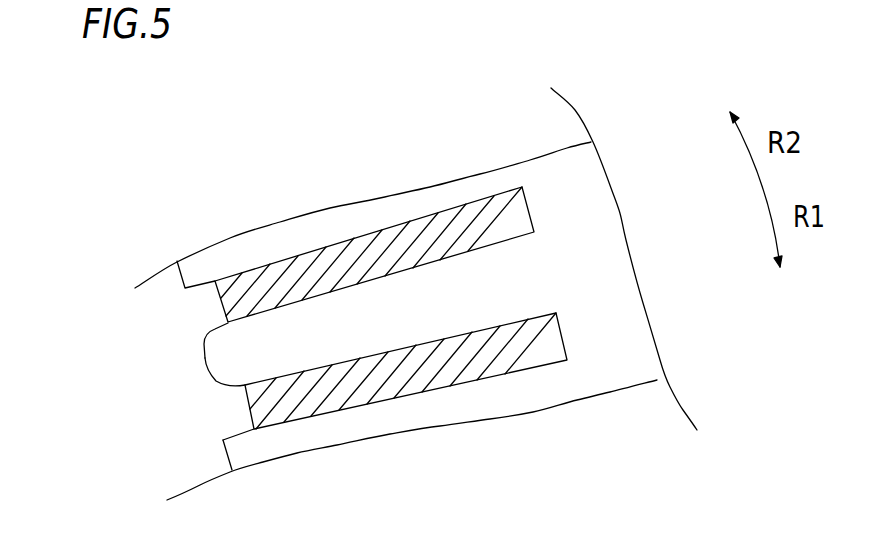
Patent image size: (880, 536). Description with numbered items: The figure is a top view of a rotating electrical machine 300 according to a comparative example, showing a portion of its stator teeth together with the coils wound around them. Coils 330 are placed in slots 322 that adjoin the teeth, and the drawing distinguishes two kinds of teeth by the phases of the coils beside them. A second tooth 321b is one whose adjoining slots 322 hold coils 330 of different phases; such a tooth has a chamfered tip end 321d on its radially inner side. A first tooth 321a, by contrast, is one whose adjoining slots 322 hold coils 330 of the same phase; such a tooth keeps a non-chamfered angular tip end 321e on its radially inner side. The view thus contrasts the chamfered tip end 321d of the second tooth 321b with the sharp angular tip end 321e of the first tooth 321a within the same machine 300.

The rotating electrical machine 300 is at (634, 103).
The coils 330 is at (518, 212).
The slots 322 is at (202, 287).
The second tooth 321b is at (221, 365).
The chamfered tip end 321d is at (207, 376).
The non-chamfered angular tip end 321e is at (222, 442).
The first tooth 321a is at (240, 453).